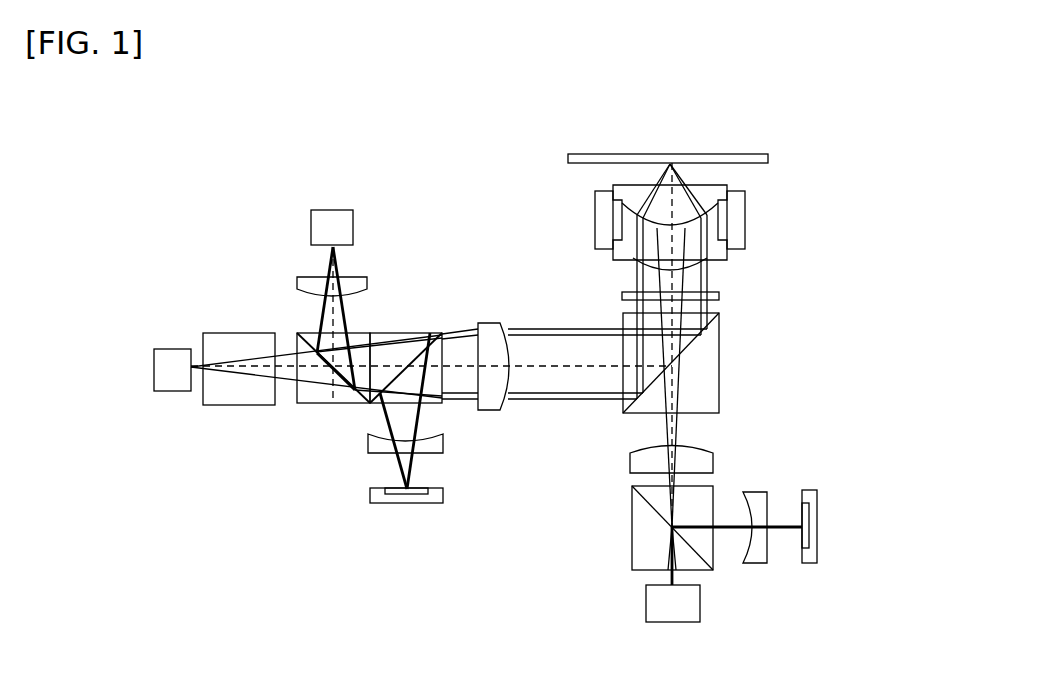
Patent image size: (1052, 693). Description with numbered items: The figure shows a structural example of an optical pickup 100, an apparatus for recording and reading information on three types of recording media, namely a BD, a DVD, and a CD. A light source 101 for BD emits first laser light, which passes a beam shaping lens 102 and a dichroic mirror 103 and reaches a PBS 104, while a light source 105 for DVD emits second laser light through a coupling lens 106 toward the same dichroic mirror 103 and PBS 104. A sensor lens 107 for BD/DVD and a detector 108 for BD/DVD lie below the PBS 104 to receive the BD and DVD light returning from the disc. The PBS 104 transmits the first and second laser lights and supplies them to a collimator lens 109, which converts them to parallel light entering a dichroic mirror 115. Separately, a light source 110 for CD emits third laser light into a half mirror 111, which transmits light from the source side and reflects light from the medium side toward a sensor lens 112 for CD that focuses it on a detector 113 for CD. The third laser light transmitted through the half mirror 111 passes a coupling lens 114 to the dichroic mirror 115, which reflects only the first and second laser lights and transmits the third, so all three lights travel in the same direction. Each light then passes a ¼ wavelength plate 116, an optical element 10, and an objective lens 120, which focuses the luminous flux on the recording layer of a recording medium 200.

The optical pickup 100 is at (850, 138).
The recording medium 200 is at (718, 153).
The optical element 10 is at (727, 258).
The objective lens 120 is at (727, 186).
The light source for BD 101 is at (167, 348).
The beam shaping lens 102 is at (225, 333).
The dichroic mirror 103 is at (312, 404).
The PBS (Polarized Beam Splitter) 104 is at (440, 332).
The light source for DVD 105 is at (355, 212).
The coupling lens 106 is at (368, 280).
The sensor lens for BD/DVD 107 is at (443, 452).
The detector for BD/DVD 108 is at (443, 503).
The collimator lens 109 is at (488, 323).
The light source for CD 110 is at (646, 606).
The half mirror 111 is at (632, 518).
The sensor lens for CD 112 is at (757, 563).
The detector for CD 113 is at (812, 490).
The coupling lens 114 is at (713, 450).
The dichroic mirror 115 is at (720, 345).
The ¼ wavelength plate 116 is at (719, 301).